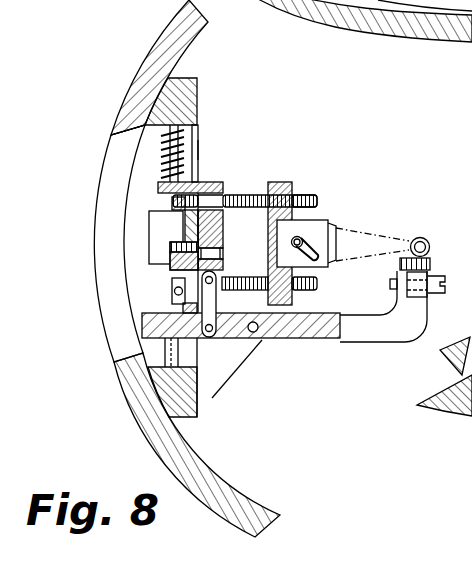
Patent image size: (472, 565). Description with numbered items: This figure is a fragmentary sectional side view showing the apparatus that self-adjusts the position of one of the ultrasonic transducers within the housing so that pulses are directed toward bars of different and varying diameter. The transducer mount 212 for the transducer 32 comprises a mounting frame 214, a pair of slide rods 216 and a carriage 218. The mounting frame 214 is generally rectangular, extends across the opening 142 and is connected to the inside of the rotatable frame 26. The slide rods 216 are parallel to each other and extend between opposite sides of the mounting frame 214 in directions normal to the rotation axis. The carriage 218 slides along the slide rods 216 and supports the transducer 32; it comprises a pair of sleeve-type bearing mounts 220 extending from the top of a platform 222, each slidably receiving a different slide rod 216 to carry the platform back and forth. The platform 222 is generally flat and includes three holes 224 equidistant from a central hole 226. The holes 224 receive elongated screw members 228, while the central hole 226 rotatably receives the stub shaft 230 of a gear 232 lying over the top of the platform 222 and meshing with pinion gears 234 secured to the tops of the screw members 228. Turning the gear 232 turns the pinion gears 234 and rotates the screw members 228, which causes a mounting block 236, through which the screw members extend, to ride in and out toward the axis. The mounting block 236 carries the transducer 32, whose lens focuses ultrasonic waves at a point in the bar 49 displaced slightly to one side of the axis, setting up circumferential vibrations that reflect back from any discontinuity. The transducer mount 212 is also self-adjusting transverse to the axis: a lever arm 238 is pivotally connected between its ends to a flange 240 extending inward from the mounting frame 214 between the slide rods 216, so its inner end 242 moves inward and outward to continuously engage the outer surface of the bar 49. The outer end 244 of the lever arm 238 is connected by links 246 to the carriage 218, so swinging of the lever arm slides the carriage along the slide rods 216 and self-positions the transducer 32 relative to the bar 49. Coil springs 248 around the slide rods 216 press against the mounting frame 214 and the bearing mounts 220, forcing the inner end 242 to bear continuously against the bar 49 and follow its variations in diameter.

The rotatable frame 26 is at (167, 38).
The opening 142 is at (110, 137).
The mounting frame 214 is at (199, 81).
The transducer mount 212 is at (199, 132).
The coil springs 248 is at (199, 150).
The slide rods 216 is at (184, 172).
The pinion gears 234 is at (167, 187).
The carriage 218 is at (233, 187).
The platform 222 is at (224, 190).
The mounting block 236 is at (293, 182).
The screw members 228 is at (318, 195).
The transducer 32 is at (326, 222).
The bar 49 is at (426, 238).
The sleeve-type bearing mounts 220 is at (149, 222).
The holes 224 is at (226, 212).
The stub shaft 230 is at (216, 252).
The central hole 226 is at (222, 258).
The gear 232 is at (187, 245).
The links 246 is at (207, 314).
The inner end 242 is at (431, 263).
The outer end 244 is at (158, 322).
The lever arm 238 is at (332, 348).
The flange 240 is at (232, 373).